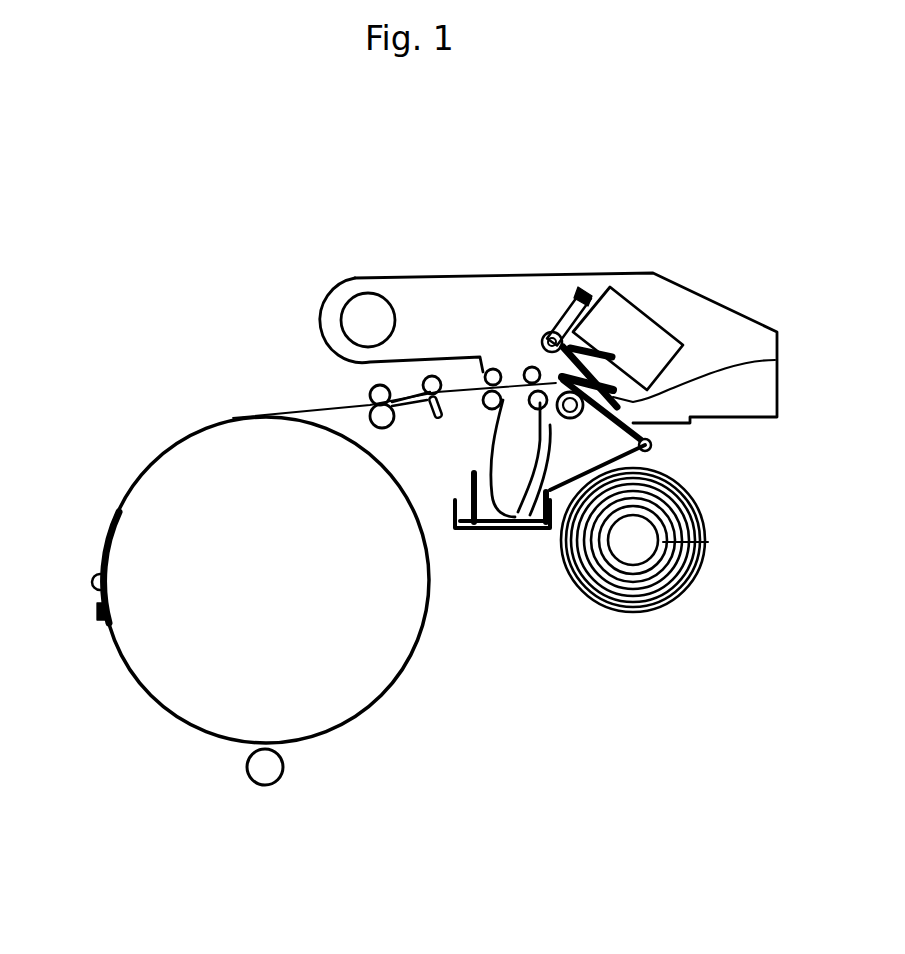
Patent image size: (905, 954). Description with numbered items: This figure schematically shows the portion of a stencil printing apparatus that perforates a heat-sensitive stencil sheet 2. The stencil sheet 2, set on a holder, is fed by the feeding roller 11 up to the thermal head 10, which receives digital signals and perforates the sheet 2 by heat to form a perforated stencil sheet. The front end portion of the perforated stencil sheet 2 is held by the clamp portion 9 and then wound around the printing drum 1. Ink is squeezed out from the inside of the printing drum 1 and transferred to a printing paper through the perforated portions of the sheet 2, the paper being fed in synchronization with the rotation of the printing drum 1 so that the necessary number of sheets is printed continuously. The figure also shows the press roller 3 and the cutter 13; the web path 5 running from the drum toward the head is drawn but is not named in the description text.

The printing drum 1 is at (363, 713).
The stencil sheet 2 is at (118, 512).
The press roller 3 is at (255, 780).
The cloth web 5 is at (307, 412).
The clamp portion 9 is at (105, 547).
The thermal head 10 is at (775, 360).
The feeding roller 11 is at (510, 490).
The cutter 13 is at (428, 372).